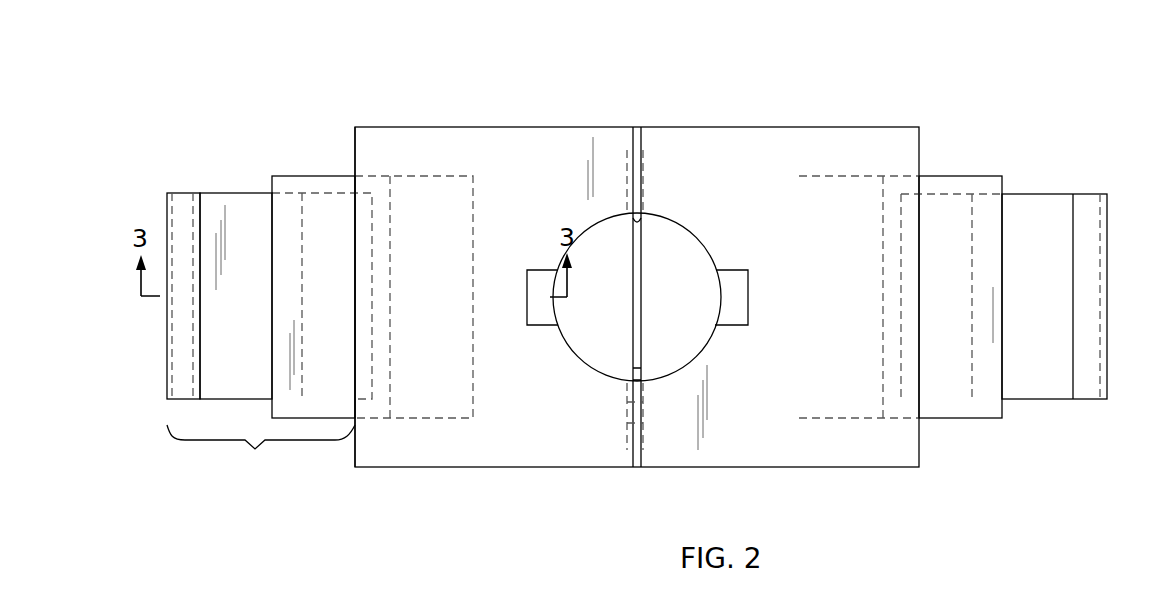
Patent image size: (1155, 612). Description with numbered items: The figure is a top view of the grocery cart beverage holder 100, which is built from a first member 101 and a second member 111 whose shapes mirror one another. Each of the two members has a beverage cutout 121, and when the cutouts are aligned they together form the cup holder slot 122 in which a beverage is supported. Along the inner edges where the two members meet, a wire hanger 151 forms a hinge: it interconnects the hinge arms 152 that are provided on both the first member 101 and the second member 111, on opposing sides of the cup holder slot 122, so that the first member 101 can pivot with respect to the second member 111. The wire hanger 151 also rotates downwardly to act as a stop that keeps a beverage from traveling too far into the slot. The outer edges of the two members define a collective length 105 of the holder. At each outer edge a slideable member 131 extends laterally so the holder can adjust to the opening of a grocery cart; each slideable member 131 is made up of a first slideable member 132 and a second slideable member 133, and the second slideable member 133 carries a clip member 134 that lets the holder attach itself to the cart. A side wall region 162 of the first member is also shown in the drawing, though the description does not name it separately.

The grocery cart beverage holder 100 is at (197, 131).
The first member 101 is at (607, 127).
The length 105 is at (918, 515).
The second member 111 is at (815, 128).
The beverage cutout 121 is at (612, 212).
The cup holder slot 122 is at (676, 276).
The slideable member 131 is at (261, 451).
The first slideable member 132 is at (297, 176).
The second slideable member 133 is at (235, 193).
The clip member 134 is at (183, 193).
The wire hanger 151 is at (635, 268).
The hinge arms 152 is at (628, 432).
The side wall 162 is at (423, 150).